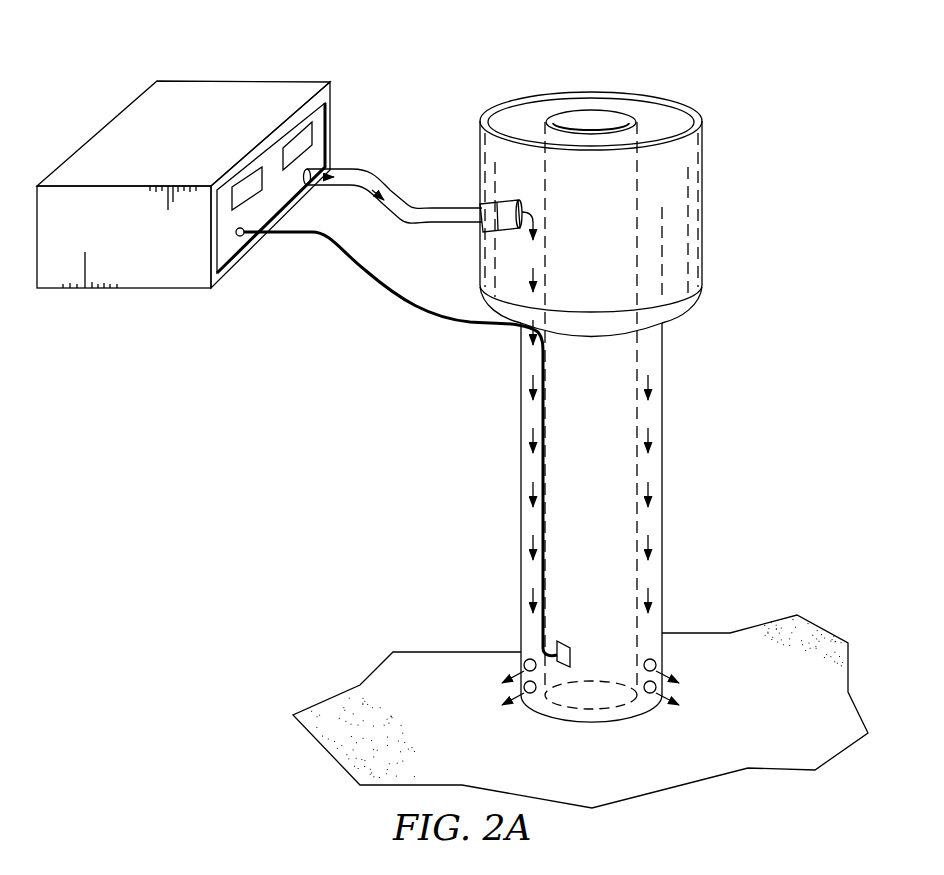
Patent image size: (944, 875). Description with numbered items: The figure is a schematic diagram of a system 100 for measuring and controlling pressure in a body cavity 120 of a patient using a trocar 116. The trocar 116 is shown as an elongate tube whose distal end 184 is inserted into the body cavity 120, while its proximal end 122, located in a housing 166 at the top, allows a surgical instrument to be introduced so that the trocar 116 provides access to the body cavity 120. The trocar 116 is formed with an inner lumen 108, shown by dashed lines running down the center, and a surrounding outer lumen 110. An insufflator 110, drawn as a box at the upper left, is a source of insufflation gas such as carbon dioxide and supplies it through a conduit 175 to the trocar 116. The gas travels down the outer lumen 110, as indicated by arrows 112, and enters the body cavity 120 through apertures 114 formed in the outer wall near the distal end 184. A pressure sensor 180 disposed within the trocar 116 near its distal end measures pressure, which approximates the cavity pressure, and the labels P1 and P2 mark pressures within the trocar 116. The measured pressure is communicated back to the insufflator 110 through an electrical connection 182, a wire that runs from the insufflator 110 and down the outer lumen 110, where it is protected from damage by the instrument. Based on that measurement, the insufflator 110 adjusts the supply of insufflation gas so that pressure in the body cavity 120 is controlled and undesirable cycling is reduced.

The system 100 is at (409, 41).
The inner lumen 108 is at (634, 430).
The insufflator 110 is at (136, 246).
The arrows 112 is at (375, 195).
The apertures 114 is at (525, 662).
The trocar 116 is at (740, 320).
The body cavity 120 is at (789, 701).
The proximal end 122 is at (667, 122).
The housing 166 is at (690, 186).
The conduit 175 is at (395, 180).
The pressure sensor 180 is at (567, 642).
The electrical connection 182 is at (383, 282).
The distal end 184 is at (652, 726).
The pressure P1 is at (655, 477).
The pressure P2 is at (630, 532).